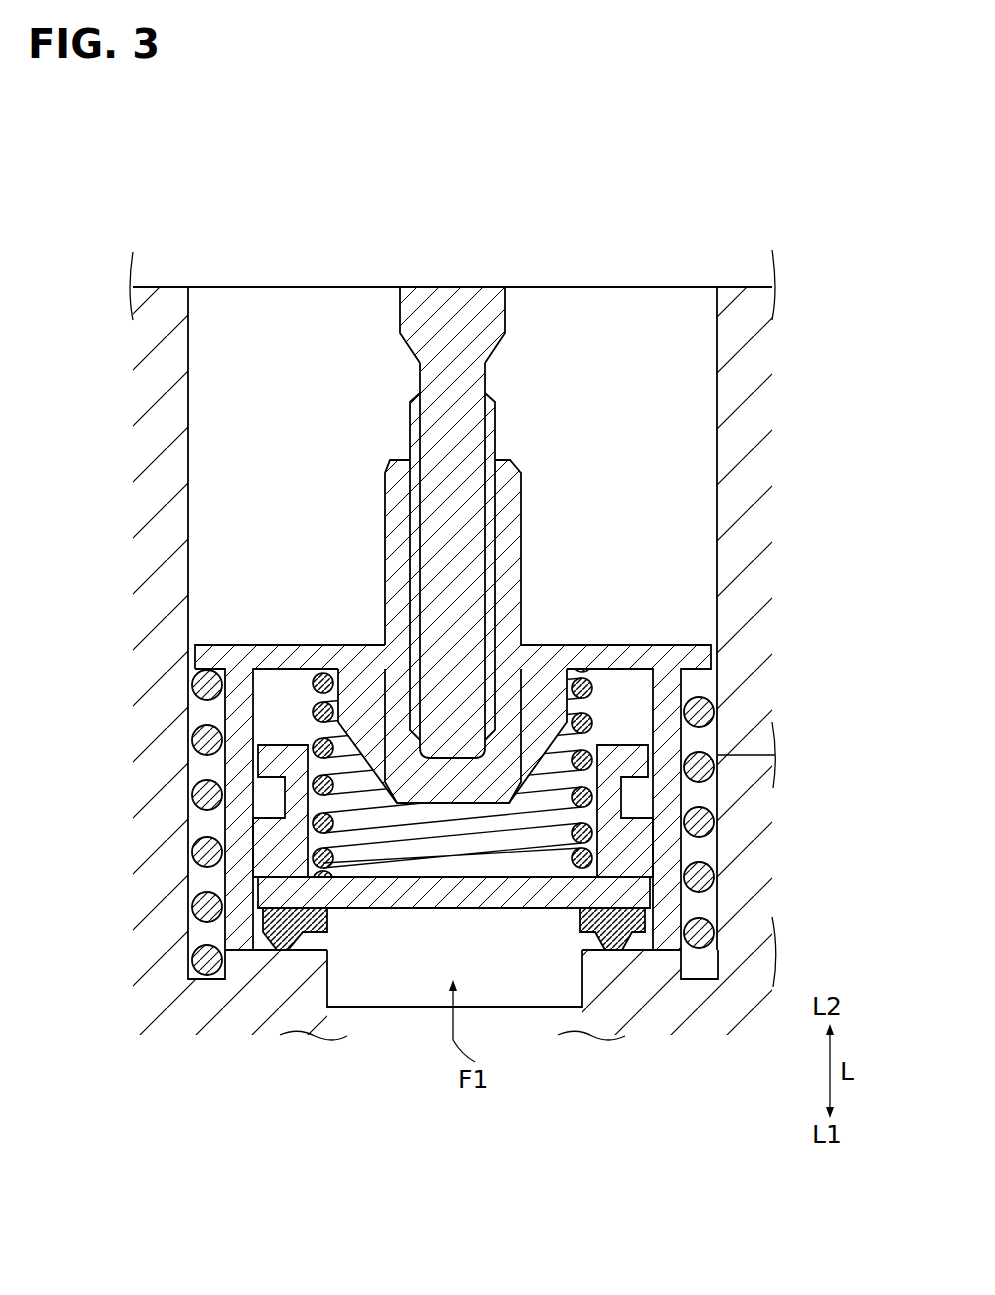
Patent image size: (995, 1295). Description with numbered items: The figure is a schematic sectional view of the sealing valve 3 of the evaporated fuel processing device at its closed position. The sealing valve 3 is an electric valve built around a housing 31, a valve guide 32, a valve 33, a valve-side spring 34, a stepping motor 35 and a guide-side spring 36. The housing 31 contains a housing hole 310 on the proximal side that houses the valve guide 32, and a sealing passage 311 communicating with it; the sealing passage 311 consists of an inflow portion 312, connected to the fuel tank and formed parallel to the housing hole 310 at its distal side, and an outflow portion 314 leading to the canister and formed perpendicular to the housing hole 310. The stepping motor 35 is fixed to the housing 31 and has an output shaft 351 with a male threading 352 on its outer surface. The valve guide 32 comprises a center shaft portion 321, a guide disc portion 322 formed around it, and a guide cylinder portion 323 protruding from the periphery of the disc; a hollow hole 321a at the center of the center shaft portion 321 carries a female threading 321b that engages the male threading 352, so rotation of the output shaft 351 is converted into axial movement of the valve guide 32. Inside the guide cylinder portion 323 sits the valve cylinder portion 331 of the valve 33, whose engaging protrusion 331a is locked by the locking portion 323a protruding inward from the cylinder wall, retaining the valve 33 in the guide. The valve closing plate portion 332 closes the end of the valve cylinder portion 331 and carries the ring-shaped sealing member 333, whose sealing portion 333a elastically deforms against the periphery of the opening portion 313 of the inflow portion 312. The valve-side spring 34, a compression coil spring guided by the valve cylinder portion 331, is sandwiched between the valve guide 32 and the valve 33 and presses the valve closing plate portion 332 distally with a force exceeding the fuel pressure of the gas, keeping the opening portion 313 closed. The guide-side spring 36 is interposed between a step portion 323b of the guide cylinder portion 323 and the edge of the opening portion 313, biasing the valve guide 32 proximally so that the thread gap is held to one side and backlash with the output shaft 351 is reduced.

The sealing valve 3 is at (206, 218).
The housing 31 is at (237, 1012).
The housing hole 310 is at (312, 473).
The sealing passage 311 is at (752, 903).
The inflow portion 312 is at (433, 973).
The opening portion 313 is at (327, 950).
The outflow portion 314 is at (750, 867).
The valve guide 32 is at (378, 612).
The center shaft portion 321 is at (510, 515).
The hollow hole 321a is at (470, 660).
The female threading 321b is at (497, 535).
The guide disc portion 322 is at (309, 700).
The guide cylinder portion 323 is at (262, 768).
The locking portion 323a is at (270, 802).
The step portion 323b is at (192, 688).
The valve 33 is at (498, 925).
The valve cylinder portion 331 is at (613, 833).
The engaging protrusion 331a is at (638, 763).
The valve closing plate portion 332 is at (540, 892).
The sealing member 333 is at (267, 918).
The sealing portion 333a is at (278, 945).
The valve-side spring 34 is at (233, 644).
The stepping motor 35 is at (637, 257).
The output shaft 351 is at (457, 313).
The male threading 352 is at (413, 430).
The guide-side spring 36 is at (192, 733).